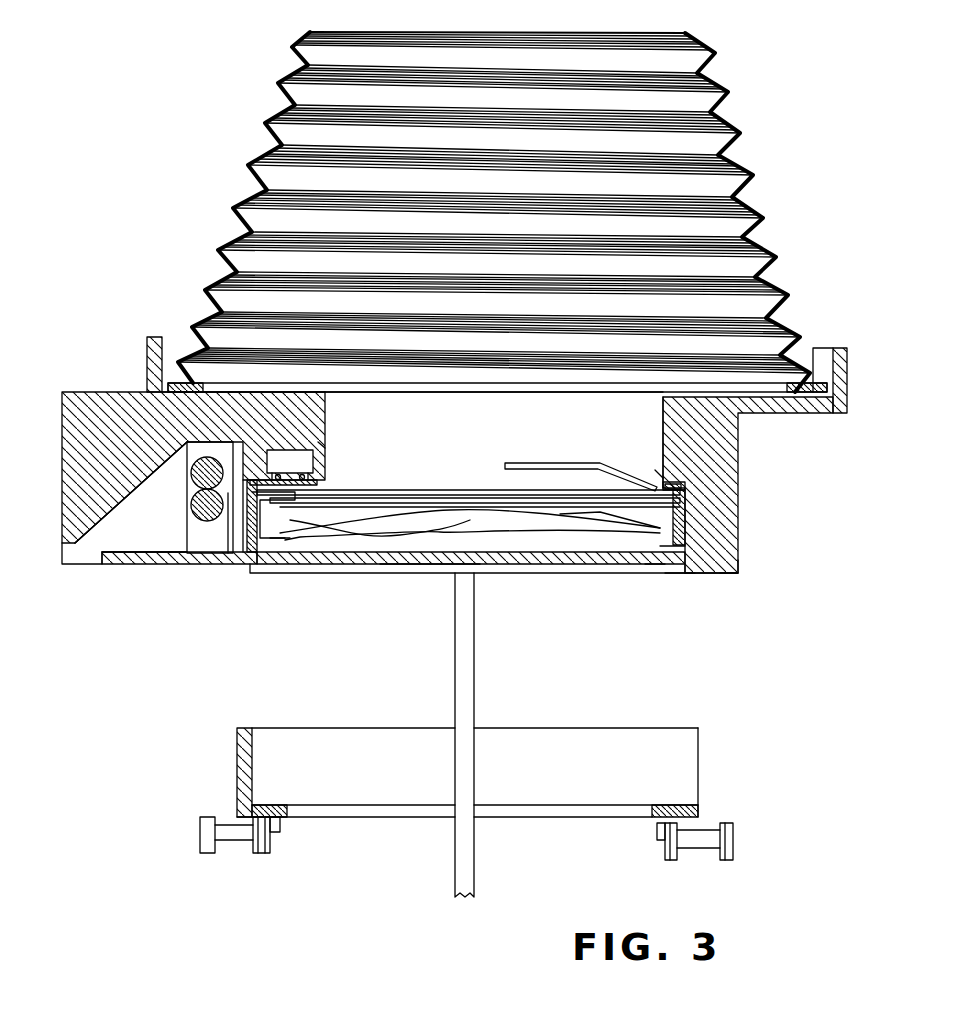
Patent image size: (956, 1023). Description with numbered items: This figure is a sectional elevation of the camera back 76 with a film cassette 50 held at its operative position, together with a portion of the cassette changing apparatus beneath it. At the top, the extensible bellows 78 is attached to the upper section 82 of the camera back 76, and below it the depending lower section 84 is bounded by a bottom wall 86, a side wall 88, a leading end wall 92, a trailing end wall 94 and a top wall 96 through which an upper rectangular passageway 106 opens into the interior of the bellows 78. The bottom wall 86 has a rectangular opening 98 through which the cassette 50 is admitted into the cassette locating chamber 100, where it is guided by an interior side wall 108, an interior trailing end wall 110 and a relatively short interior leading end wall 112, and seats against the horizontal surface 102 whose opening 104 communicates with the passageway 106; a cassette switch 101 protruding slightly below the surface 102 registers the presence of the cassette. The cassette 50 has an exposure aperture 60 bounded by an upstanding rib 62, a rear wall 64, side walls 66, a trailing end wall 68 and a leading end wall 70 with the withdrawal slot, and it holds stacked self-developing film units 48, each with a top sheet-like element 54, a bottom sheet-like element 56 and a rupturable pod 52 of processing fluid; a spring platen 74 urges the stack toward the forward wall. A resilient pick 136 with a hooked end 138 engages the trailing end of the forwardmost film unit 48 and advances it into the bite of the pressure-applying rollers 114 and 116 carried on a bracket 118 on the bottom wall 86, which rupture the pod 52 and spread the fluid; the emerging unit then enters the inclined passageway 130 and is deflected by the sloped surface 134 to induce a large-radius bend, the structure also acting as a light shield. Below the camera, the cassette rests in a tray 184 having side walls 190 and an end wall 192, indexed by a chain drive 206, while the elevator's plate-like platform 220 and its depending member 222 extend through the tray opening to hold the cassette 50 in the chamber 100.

The extensible bellows 78 is at (752, 176).
The upper section 82 is at (841, 348).
The camera back 76 is at (858, 370).
The top wall 96 is at (140, 384).
The leading end wall 92 is at (62, 456).
The cassette switch 101 is at (265, 433).
The horizontal surface 102 is at (323, 442).
The upstanding rib 62 is at (337, 478).
The exposure aperture 60 is at (351, 480).
The top sheet-like element 54 is at (386, 490).
The bottom sheet-like element 56 is at (418, 498).
The self-developing film unit 48 is at (464, 484).
The upper rectangular passageway 106 is at (440, 388).
The side wall 88 is at (512, 423).
The resilient pick 136 is at (590, 463).
The opening 104 is at (659, 470).
The hooked end 138 is at (673, 486).
The lower section 84 is at (745, 493).
The cassette 50 is at (687, 517).
The trailing end wall 68 is at (678, 536).
The trailing end wall 94 is at (739, 553).
The rectangular opening 98 is at (684, 573).
The trailing end wall 110 is at (673, 562).
The cassette locating chamber 100 is at (653, 562).
The interior side wall 108 is at (612, 570).
The chain drive 206 is at (523, 560).
The cassette engaging platform 220 is at (436, 566).
The spring platen 74 is at (372, 540).
The leading end wall 70 is at (278, 542).
The rear wall 64 is at (252, 554).
The rupturable pod 52 is at (280, 496).
The side walls 66 is at (462, 532).
The leading end wall 112 is at (241, 546).
The bottom wall 86 is at (157, 566).
The inclined passageway 130 is at (120, 532).
The sloped surface 134 is at (106, 520).
The upper pressure-applying roller 114 is at (193, 476).
The lower pressure-applying roller 116 is at (193, 504).
The bracket 118 is at (197, 538).
The end wall 192 is at (241, 728).
The depending member 222 is at (467, 677).
The side walls 190 is at (507, 738).
The tray 184 is at (608, 731).